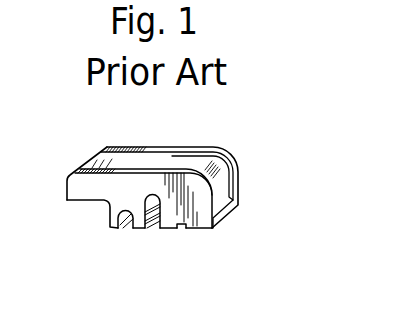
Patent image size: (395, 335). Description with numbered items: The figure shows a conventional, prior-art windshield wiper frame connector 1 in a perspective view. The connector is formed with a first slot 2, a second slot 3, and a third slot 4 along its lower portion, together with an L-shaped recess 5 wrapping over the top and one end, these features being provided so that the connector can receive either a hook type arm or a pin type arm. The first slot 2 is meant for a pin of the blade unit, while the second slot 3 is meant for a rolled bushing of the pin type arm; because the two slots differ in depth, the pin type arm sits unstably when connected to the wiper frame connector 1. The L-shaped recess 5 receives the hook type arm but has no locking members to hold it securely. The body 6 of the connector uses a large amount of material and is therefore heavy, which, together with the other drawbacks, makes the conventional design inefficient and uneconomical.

The windshield wiper frame connector 1 is at (228, 149).
The first slot 2 is at (120, 229).
The second slot 3 is at (150, 228).
The third slot 4 is at (181, 226).
The L-shaped recess 5 is at (224, 192).
The body 6 is at (89, 190).